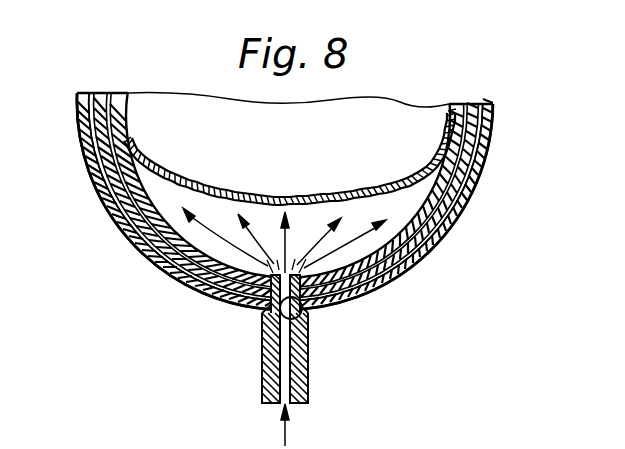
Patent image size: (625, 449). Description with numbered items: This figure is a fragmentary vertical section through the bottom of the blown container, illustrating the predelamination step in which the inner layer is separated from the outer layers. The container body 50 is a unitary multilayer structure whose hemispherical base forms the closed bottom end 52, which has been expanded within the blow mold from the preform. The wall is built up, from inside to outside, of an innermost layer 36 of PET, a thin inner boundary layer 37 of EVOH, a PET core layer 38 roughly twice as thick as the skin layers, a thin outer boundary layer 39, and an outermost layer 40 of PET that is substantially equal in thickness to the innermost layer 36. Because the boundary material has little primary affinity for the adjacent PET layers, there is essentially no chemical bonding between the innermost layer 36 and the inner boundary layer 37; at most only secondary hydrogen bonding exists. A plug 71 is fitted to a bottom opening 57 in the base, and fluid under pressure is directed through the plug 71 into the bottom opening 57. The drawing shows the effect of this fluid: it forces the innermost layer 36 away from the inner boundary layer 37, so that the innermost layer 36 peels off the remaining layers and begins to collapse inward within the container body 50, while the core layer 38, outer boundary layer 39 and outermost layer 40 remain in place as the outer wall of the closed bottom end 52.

The innermost layer 36 is at (142, 150).
The inner boundary layer 37 is at (108, 93).
The core layer 38 is at (100, 93).
The outer boundary layer 39 is at (90, 93).
The outermost layer 40 is at (82, 92).
The container body 50 is at (504, 127).
The closed bottom end 52 is at (478, 178).
The bottom opening 57 is at (308, 329).
The plug 71 is at (307, 373).